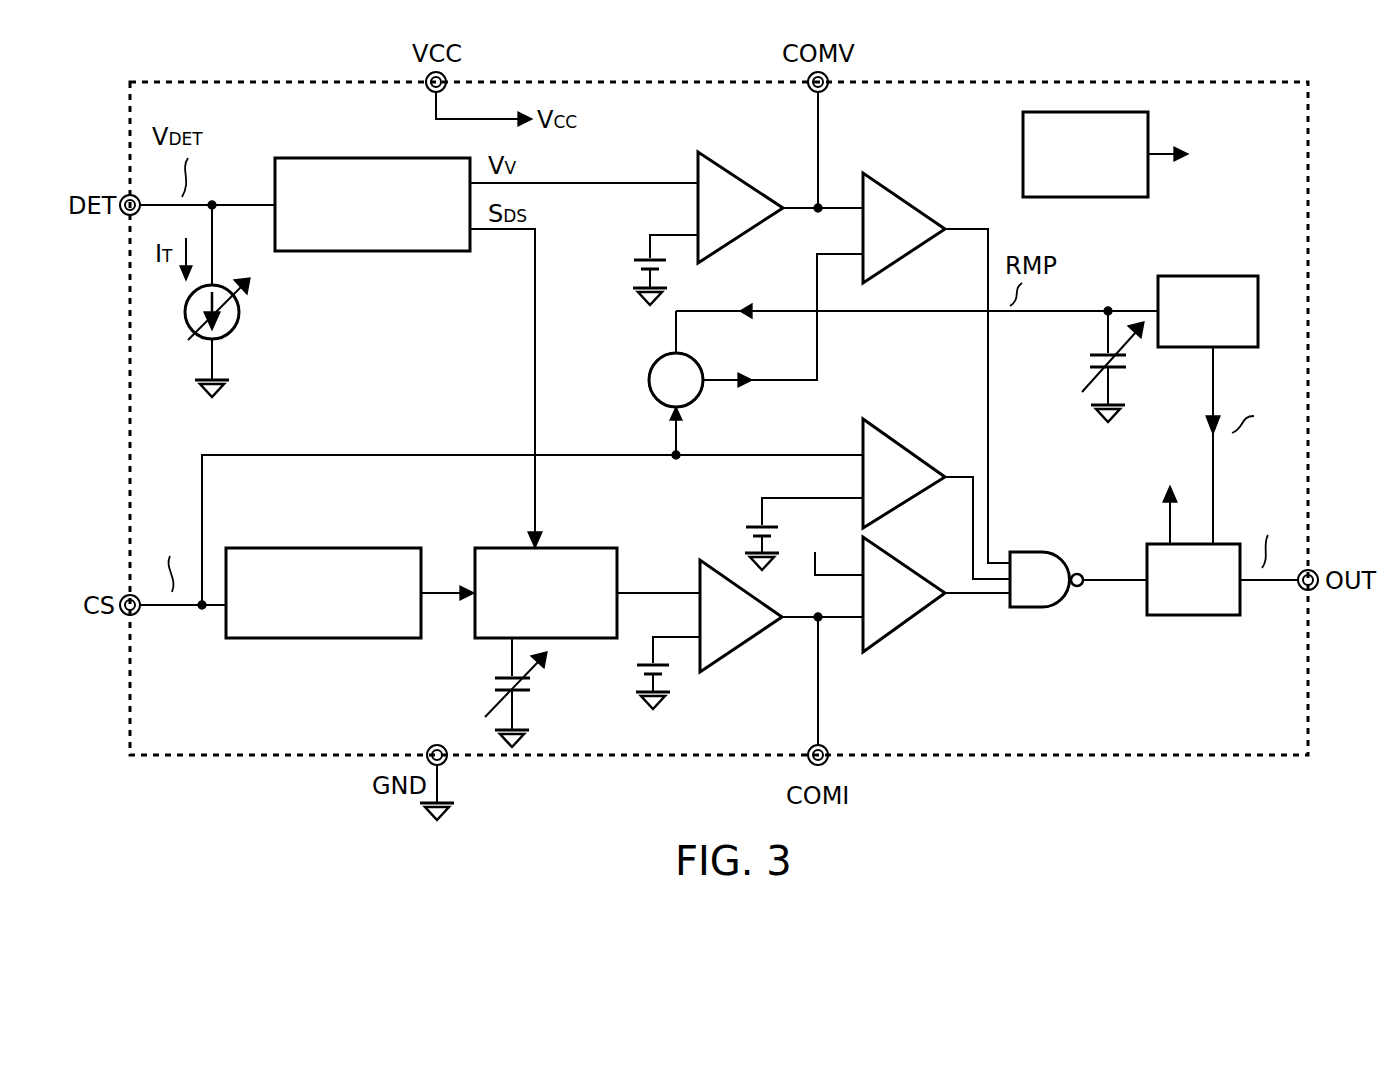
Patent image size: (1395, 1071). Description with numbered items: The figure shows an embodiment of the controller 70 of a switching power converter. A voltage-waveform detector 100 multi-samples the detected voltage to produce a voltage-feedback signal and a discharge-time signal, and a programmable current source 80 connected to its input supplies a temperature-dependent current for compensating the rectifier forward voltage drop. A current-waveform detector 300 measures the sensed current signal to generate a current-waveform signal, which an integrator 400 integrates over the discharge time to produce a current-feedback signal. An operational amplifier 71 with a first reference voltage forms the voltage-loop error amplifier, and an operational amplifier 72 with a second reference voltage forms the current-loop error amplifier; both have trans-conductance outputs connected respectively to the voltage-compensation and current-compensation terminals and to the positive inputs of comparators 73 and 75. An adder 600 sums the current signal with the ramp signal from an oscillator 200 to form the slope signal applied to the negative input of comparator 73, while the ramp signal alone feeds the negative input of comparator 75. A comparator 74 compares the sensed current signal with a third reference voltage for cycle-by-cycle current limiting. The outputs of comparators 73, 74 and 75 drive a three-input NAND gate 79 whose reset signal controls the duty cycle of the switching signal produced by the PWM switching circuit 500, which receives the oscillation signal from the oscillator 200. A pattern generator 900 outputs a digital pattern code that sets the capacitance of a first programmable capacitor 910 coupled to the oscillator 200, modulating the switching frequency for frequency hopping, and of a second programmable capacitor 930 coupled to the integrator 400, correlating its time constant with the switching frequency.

The controller 70 is at (1232, 80).
The operational amplifier 71 is at (736, 160).
The operational amplifier 72 is at (742, 657).
The comparator 73 is at (900, 196).
The comparator 74 is at (905, 446).
The comparator 75 is at (910, 628).
The NAND gate 79 is at (1035, 612).
The programmable current source 80 is at (243, 322).
The voltage-waveform detector 100 is at (375, 255).
The oscillator 200 is at (1233, 272).
The current-waveform detector 300 is at (258, 643).
The integrator 400 is at (595, 545).
The switching circuit 500 is at (1195, 620).
The adder 600 is at (648, 386).
The pattern generator 900 is at (1100, 200).
The first programmable capacitor 910 is at (1135, 362).
The second programmable capacitor 930 is at (538, 688).